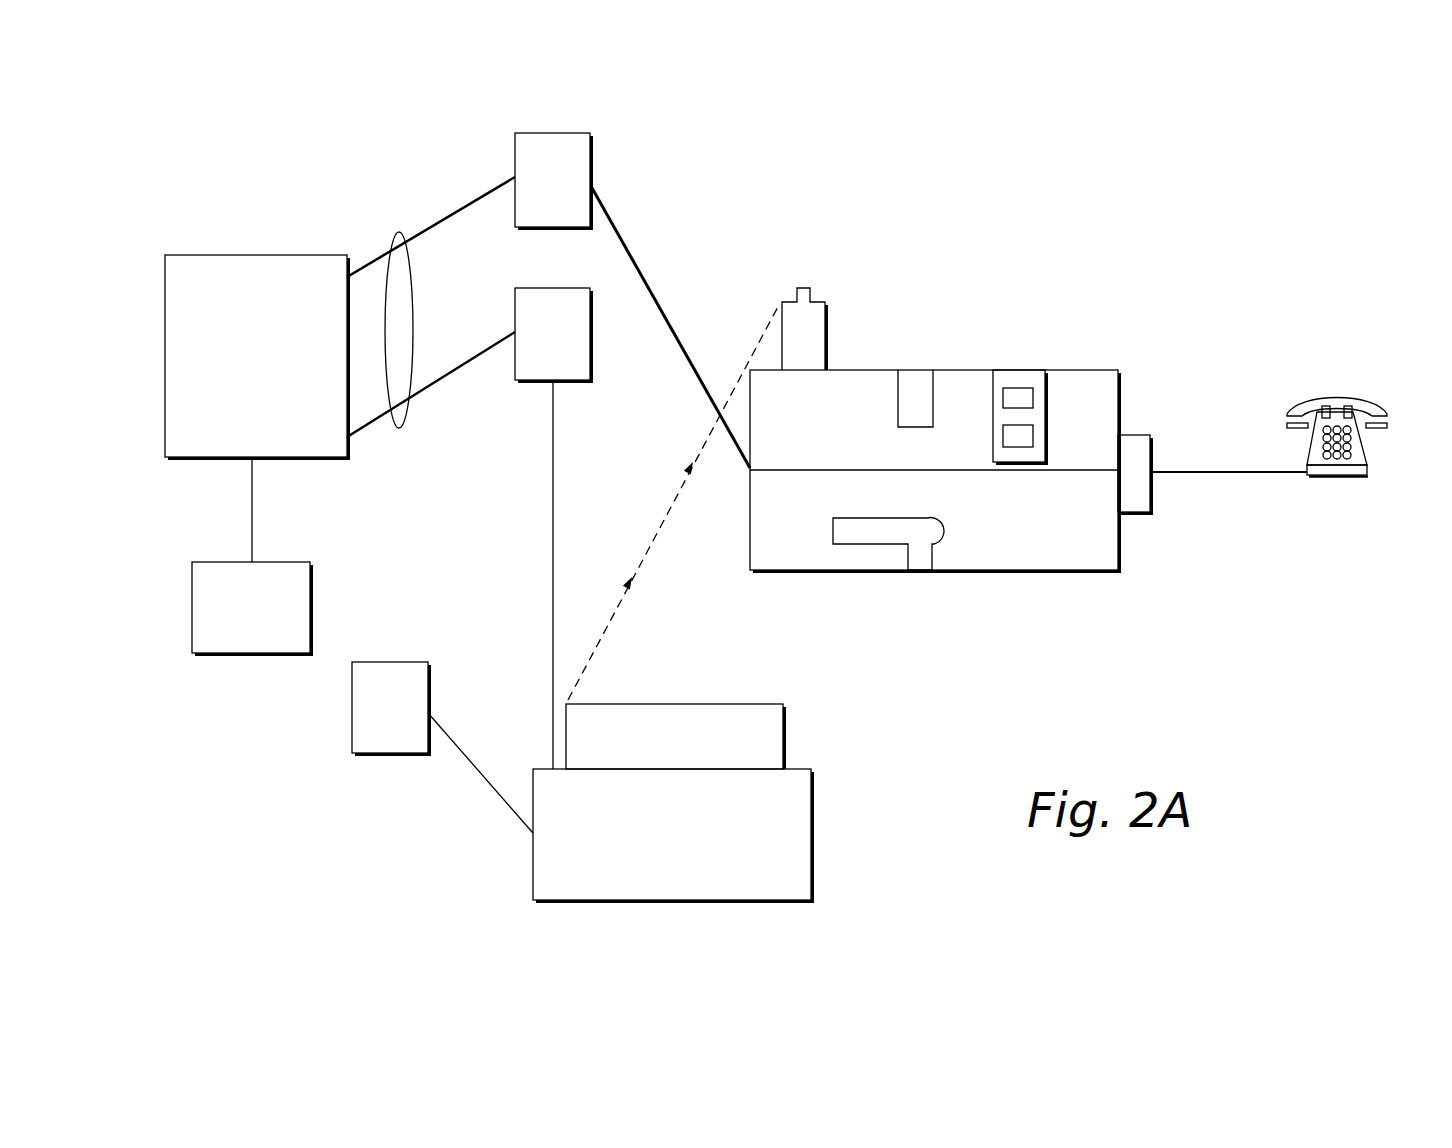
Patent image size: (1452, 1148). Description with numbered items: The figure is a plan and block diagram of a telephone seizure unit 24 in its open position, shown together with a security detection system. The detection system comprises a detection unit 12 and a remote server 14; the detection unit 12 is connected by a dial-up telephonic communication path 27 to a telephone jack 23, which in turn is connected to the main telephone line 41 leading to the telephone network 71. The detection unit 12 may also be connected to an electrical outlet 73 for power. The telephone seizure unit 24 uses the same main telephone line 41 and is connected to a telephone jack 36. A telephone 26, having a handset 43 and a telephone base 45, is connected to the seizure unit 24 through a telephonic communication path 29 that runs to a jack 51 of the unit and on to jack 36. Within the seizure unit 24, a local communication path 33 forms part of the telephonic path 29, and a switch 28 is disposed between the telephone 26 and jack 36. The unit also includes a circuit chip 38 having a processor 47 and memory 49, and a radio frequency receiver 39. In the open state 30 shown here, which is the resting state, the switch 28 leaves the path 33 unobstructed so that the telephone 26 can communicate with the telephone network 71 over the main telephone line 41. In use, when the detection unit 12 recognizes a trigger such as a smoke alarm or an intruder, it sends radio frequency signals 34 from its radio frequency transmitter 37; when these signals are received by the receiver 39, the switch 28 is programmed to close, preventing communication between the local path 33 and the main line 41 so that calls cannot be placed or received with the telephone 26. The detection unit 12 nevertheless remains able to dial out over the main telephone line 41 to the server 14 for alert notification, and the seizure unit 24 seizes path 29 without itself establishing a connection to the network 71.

The telephone network 71 is at (255, 255).
The telephone jack 36 is at (557, 133).
The telephone jack 23 is at (557, 288).
The main telephone line 41 is at (398, 232).
The telephonic communication path 29 is at (653, 290).
The dial-up telephonic communication path 27 is at (553, 556).
The server 14 is at (288, 562).
The electrical outlet 73 is at (393, 662).
The detection unit 12 is at (803, 755).
The radio frequency transmitter 37 is at (675, 704).
The radio frequency signals 34 is at (668, 512).
The telephone seizure unit 24 is at (962, 222).
The radio frequency receiver 39 is at (827, 312).
The switch 28 is at (897, 362).
The open state 30 is at (948, 440).
The circuit chip 38 is at (1018, 362).
The processor 47 is at (1033, 398).
The memory 49 is at (1033, 437).
The local communication path 33 is at (985, 470).
The jack 51 is at (1158, 455).
The telephone 26 is at (1353, 395).
The handset 43 is at (1378, 396).
The telephone base 45 is at (1370, 465).